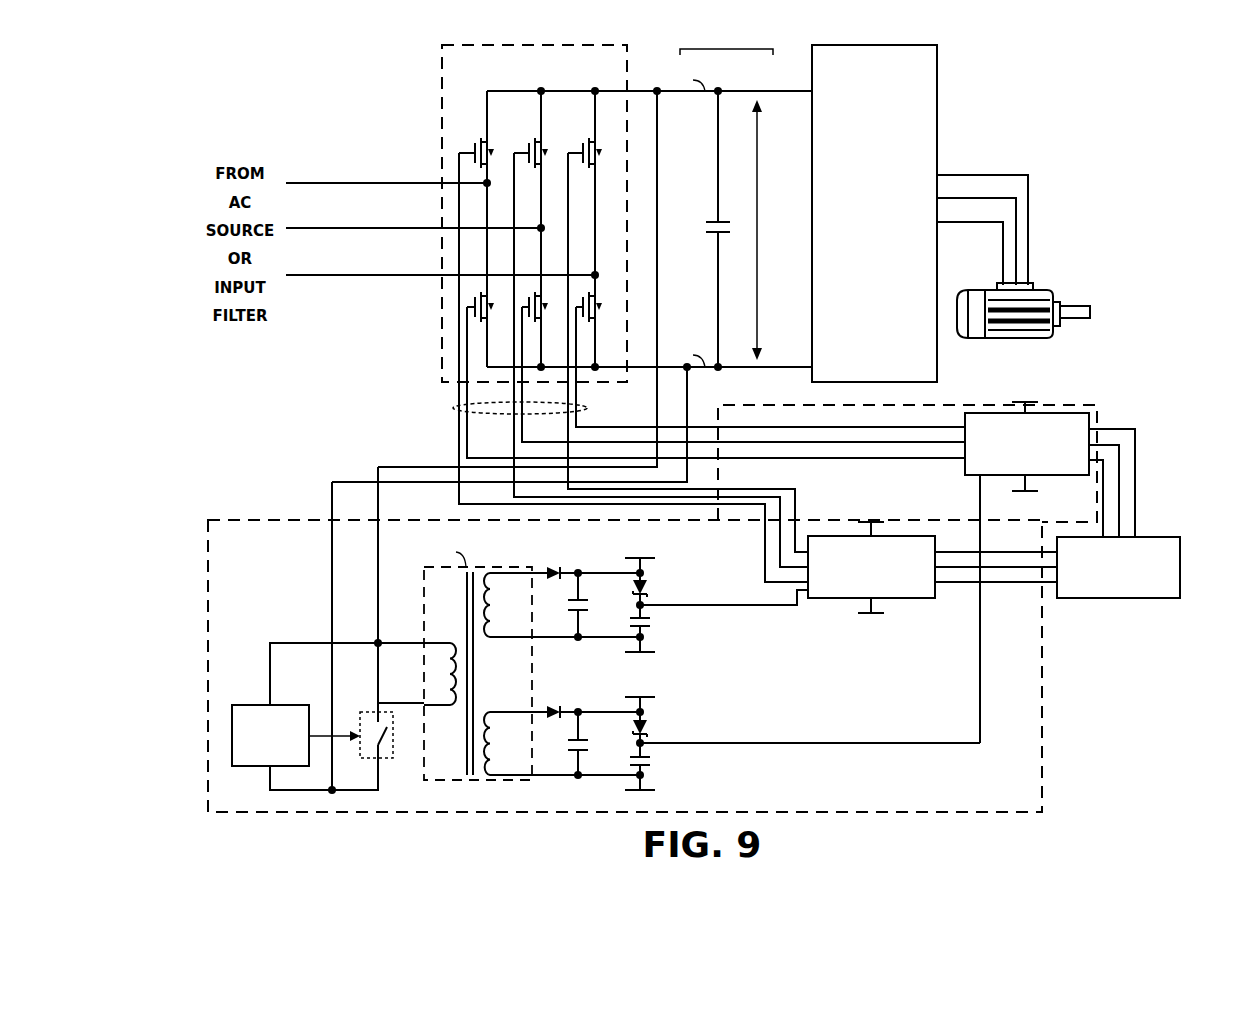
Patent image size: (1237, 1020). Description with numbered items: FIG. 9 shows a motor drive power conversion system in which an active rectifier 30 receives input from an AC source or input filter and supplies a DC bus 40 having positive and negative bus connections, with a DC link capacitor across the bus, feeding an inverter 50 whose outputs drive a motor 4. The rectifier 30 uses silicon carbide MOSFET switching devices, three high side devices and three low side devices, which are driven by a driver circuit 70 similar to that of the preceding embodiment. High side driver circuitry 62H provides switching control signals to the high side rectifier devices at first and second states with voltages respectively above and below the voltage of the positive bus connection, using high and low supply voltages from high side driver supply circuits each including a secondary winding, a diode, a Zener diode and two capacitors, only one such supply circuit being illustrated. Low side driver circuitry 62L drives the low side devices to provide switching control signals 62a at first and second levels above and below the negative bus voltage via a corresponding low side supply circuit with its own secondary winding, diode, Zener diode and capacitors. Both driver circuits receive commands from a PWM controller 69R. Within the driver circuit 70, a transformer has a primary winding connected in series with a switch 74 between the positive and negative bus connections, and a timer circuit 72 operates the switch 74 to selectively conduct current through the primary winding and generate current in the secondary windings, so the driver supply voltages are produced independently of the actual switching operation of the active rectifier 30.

The motor 4 is at (1050, 290).
The active rectifier 30 is at (533, 45).
The DC bus 40 is at (728, 48).
The inverter 50 is at (873, 45).
The switching control signals 62a is at (453, 410).
The low side driver circuitry 62L is at (1060, 413).
The high side driver circuitry 62H is at (822, 536).
The PWM controller 69R is at (1168, 537).
The driver circuit 70 is at (252, 520).
The timer circuit 72 is at (245, 705).
The switch 74 is at (368, 712).